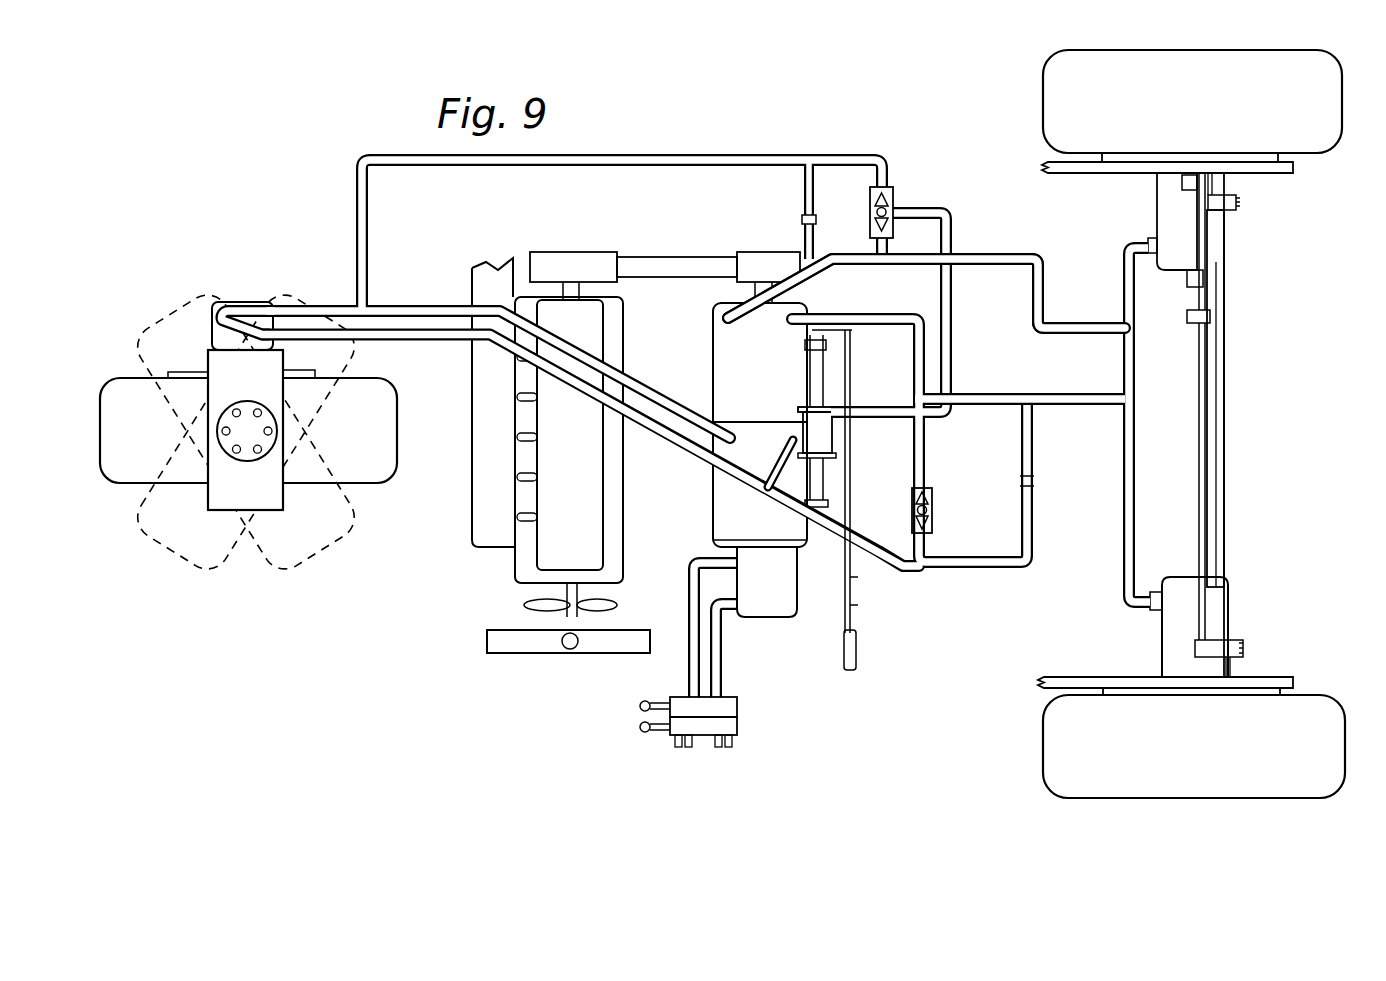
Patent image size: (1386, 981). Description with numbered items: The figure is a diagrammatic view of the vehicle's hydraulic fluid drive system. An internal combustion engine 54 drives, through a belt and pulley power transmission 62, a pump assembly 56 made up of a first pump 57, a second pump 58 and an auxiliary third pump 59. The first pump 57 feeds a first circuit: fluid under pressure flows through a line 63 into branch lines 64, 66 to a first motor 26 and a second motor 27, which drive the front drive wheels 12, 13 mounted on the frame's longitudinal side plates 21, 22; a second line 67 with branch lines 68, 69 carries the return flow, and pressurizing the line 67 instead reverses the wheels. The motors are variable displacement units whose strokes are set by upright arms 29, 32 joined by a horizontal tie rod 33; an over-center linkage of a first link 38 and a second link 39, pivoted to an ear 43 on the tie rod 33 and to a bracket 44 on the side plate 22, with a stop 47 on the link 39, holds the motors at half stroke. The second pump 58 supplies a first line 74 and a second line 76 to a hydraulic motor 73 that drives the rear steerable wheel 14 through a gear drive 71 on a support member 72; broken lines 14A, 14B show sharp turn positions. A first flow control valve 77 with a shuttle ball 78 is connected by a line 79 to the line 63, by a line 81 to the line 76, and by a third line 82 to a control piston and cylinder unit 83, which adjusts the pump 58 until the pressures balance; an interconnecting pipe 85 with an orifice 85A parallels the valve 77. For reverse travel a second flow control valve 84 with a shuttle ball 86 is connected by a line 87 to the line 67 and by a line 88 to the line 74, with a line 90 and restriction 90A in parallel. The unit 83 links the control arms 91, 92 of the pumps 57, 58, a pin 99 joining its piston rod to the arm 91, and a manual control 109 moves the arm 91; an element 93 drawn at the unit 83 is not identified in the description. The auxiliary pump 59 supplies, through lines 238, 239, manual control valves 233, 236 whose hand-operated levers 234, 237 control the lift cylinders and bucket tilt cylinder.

The front drive wheel 12 is at (1325, 695).
The front drive wheel 13 is at (1330, 58).
The rear drive steerable wheel 14 is at (376, 471).
The sharp turn position of rear wheel 14A is at (308, 576).
The sharp turn position of rear wheel 14B is at (197, 575).
The longitudinal side plate 21 is at (1283, 681).
The longitudinal side plate 22 is at (1294, 168).
The first motor 26 is at (1228, 609).
The second motor 27 is at (1225, 238).
The upright arm 29 is at (1240, 646).
The upright arm 32 is at (1236, 208).
The tie rod 33 is at (1206, 414).
The first link 38 is at (1187, 295).
The second link 39 is at (1197, 225).
The upright ear 43 is at (1211, 317).
The bracket 44 is at (1181, 180).
The stop or projection 47 is at (1197, 272).
The internal combustion engine 54 is at (580, 488).
The pump assembly 56 is at (711, 505).
The first pump 57 is at (770, 386).
The second pump 58 is at (755, 524).
The auxiliary pump 59 is at (778, 592).
The belt and pulley power transmission 62 is at (682, 256).
The line 63 is at (1044, 262).
The branch line 64 is at (1225, 293).
The branch line 66 is at (1226, 462).
The second line 67 is at (1061, 394).
The branch line 68 is at (1124, 450).
The branch line 69 is at (1136, 355).
The gear drive 71 is at (296, 376).
The support member 72 is at (208, 357).
The hydraulic motor 73 is at (212, 330).
The first line 74 is at (661, 433).
The second line 76 is at (676, 404).
The first flow control valve 77 is at (894, 197).
The shuttle ball 78 is at (876, 210).
The line 79 is at (880, 243).
The line 81 is at (652, 155).
The third line 82 is at (952, 232).
The control piston and cylinder unit 83 is at (834, 433).
The second flow control valve 84 is at (933, 531).
The interconnecting line 85 is at (803, 237).
The restriction or orifice 85A is at (802, 218).
The shuttle ball 86 is at (934, 506).
The line 87 is at (926, 448).
The line 88 is at (885, 569).
The line 90 is at (1034, 521).
The restriction or orifice 90A is at (1035, 480).
The control arm 91 is at (830, 330).
The control arm 92 is at (792, 512).
The flange 93 is at (798, 412).
The pin 99 is at (805, 346).
The manual control 109 is at (857, 609).
The manual control valve 233 is at (738, 706).
The hand-operated lever 234 is at (640, 706).
The manual control valve 236 is at (738, 727).
The hand-operated lever 237 is at (640, 727).
The hydraulic fluid carrying line 238 is at (688, 600).
The hydraulic fluid carrying line 239 is at (722, 650).